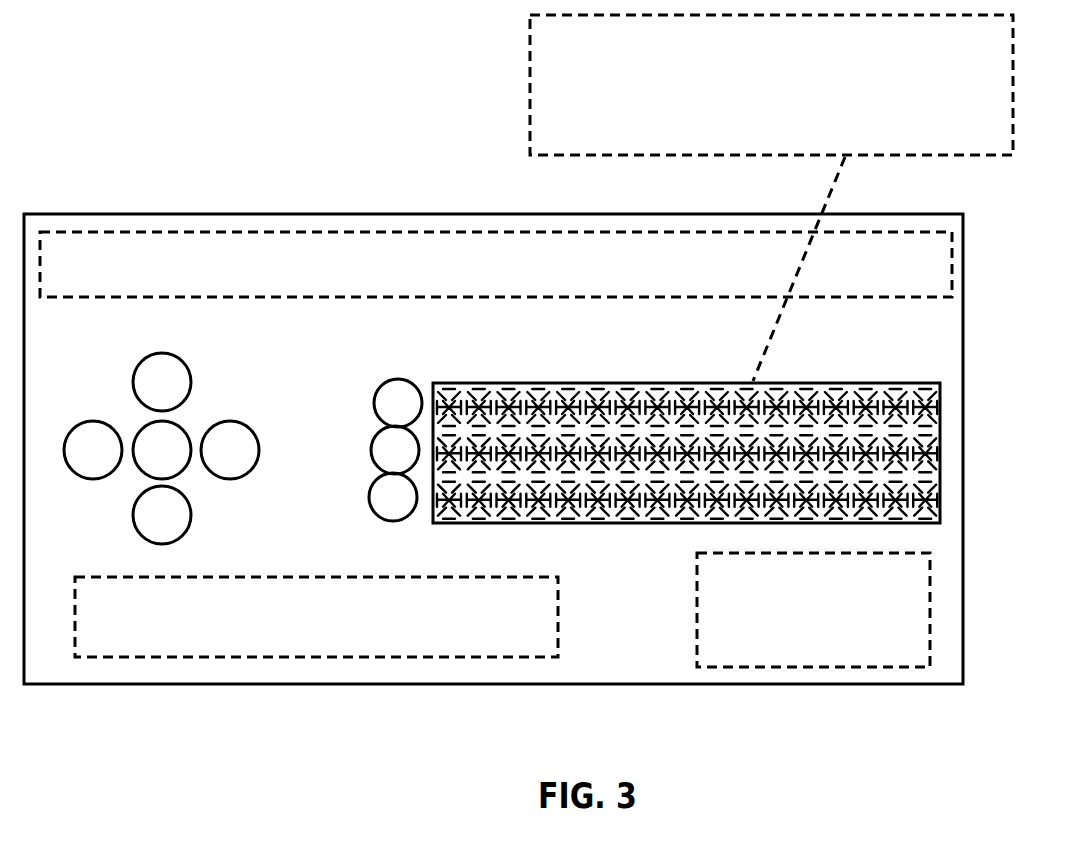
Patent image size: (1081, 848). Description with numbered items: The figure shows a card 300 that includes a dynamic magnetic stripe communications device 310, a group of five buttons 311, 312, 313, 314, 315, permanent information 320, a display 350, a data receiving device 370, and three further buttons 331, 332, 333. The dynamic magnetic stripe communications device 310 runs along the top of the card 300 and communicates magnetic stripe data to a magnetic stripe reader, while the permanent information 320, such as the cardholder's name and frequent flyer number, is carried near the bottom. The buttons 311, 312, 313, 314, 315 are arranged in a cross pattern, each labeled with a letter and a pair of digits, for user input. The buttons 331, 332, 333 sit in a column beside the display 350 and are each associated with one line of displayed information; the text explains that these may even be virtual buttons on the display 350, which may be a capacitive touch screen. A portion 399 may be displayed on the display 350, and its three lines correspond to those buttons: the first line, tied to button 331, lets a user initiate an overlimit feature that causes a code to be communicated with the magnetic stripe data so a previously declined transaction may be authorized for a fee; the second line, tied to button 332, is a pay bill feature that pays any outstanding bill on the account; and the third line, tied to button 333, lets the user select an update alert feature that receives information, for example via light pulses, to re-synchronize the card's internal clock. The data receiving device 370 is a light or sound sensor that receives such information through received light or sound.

The card 300 is at (535, 449).
The dynamic magnetic stripe communications device 310 is at (105, 297).
The button 311 is at (93, 421).
The button 312 is at (162, 353).
The button 313 is at (158, 422).
The button 314 is at (258, 450).
The button 315 is at (134, 512).
The permanent information 320 is at (82, 618).
The button 331 is at (384, 385).
The button 332 is at (379, 436).
The button 333 is at (376, 484).
The display 350 is at (683, 525).
The data receiving device 370 is at (704, 665).
The portion 399 is at (530, 80).